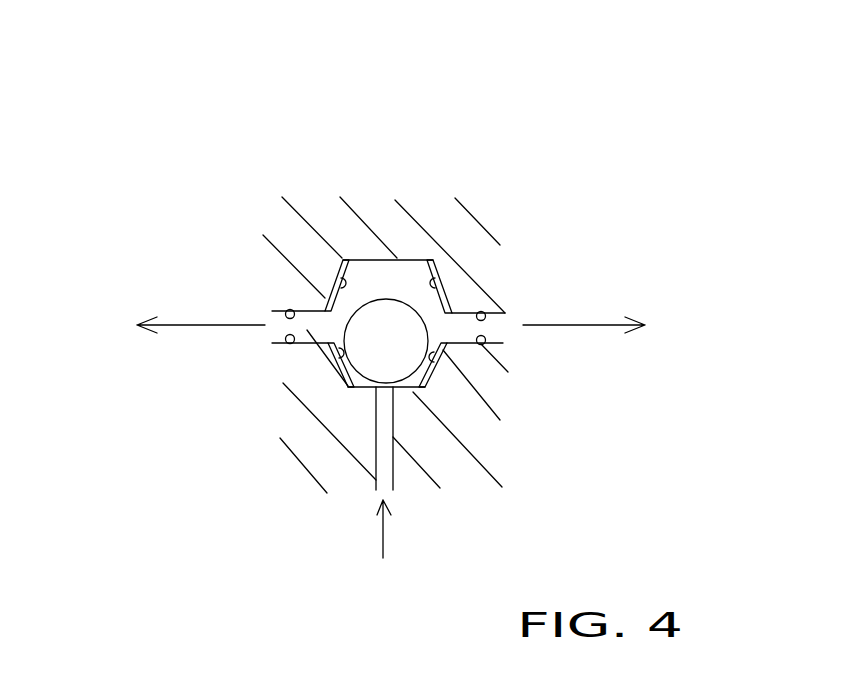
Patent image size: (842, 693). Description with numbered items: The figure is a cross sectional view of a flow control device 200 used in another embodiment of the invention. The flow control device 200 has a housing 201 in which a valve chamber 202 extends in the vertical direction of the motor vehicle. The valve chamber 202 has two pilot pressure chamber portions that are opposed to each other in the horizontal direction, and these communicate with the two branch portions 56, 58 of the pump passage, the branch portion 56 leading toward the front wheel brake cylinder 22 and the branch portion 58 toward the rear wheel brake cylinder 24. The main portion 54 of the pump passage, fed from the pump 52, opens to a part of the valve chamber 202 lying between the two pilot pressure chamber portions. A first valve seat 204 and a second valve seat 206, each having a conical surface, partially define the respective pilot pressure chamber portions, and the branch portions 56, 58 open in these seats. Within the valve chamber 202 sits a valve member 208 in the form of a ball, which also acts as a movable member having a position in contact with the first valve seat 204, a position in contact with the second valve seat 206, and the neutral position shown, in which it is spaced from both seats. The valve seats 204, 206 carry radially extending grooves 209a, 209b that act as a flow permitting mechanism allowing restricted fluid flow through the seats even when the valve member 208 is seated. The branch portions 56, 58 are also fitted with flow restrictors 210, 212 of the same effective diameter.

The flow control device 200 is at (480, 135).
The housing 201 is at (388, 227).
The valve chamber 202 is at (428, 297).
The first valve seat 204 is at (335, 352).
The second valve seat 206 is at (445, 350).
The valve member 208 is at (340, 380).
The groove 209a is at (340, 259).
The groove 209b is at (427, 262).
The flow restrictor 210 is at (289, 310).
The flow restrictor 212 is at (485, 311).
The main portion of the pump passage 54 is at (382, 445).
The branch portion of the pump passage 56 is at (272, 332).
The branch portion of the pump passage 58 is at (493, 329).
The front wheel brake cylinder 22 is at (164, 327).
The rear wheel brake cylinder 24 is at (622, 327).
The pump 52 is at (385, 583).